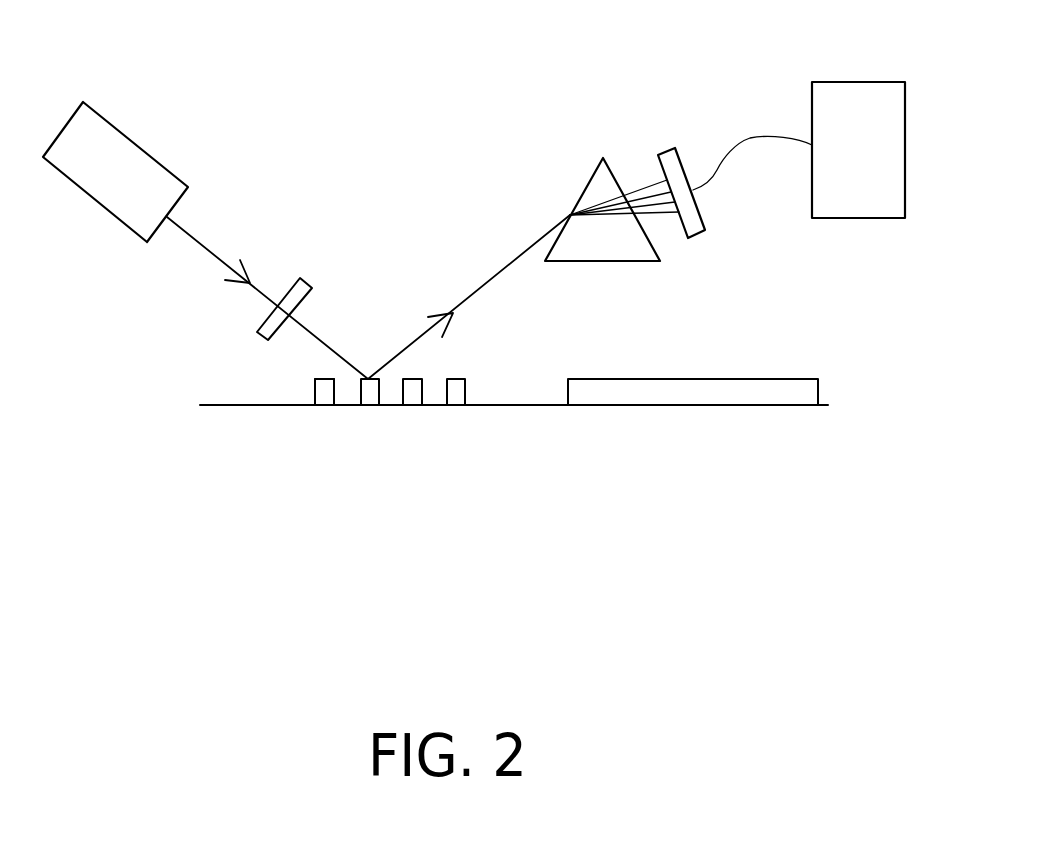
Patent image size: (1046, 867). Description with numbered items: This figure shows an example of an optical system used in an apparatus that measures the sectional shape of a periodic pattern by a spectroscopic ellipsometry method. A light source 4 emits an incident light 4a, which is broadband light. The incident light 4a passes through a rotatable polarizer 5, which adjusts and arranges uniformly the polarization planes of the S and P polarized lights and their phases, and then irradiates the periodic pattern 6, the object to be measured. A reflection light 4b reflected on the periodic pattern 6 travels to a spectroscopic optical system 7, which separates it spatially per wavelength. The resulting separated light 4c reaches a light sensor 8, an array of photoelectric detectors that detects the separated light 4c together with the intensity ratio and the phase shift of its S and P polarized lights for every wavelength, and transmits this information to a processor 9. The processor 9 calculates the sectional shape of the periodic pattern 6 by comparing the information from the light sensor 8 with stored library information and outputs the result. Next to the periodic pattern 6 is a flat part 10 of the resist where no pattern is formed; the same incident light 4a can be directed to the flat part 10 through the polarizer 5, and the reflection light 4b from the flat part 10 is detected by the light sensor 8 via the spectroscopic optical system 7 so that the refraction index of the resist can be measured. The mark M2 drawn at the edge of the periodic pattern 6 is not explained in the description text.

The light source 4 is at (100, 132).
The incident light 4a is at (203, 247).
The reflection light 4b is at (488, 278).
The separated light 4c is at (645, 183).
The rotatable polarizer 5 is at (298, 283).
The periodic pattern 6 is at (386, 442).
The spectroscopic optical system 7 is at (597, 183).
The light sensor 8 is at (683, 163).
The processor 9 is at (844, 98).
The flat part 10 is at (728, 393).
The mark M2 is at (315, 380).